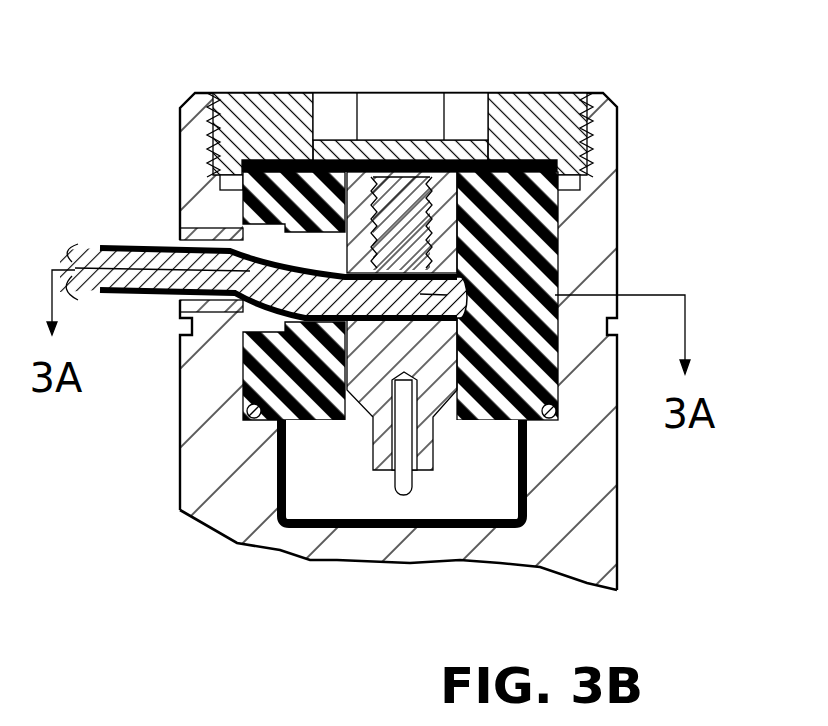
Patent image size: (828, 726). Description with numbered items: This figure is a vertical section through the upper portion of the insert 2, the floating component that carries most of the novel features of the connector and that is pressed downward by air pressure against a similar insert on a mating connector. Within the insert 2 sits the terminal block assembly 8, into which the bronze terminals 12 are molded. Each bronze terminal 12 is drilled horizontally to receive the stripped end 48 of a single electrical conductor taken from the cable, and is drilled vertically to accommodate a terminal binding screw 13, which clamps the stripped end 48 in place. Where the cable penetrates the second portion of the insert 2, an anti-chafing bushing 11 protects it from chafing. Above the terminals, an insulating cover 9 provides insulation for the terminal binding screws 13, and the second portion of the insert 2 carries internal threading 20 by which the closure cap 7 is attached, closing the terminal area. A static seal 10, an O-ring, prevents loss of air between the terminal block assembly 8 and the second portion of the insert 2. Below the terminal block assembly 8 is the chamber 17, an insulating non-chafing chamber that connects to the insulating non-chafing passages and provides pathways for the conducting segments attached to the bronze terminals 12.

The insert 2 is at (620, 490).
The closure cap 7 is at (270, 108).
The terminal block assembly 8 is at (266, 382).
The insulating cover 9 is at (455, 150).
The static seal 10 is at (258, 418).
The anti-chafing bushing 11 is at (203, 233).
The bronze terminal 12 is at (353, 208).
The terminal binding screw 13 is at (406, 205).
The chamber 17 is at (350, 528).
The internal threading 20 is at (556, 118).
The stripped end 48 is at (425, 290).